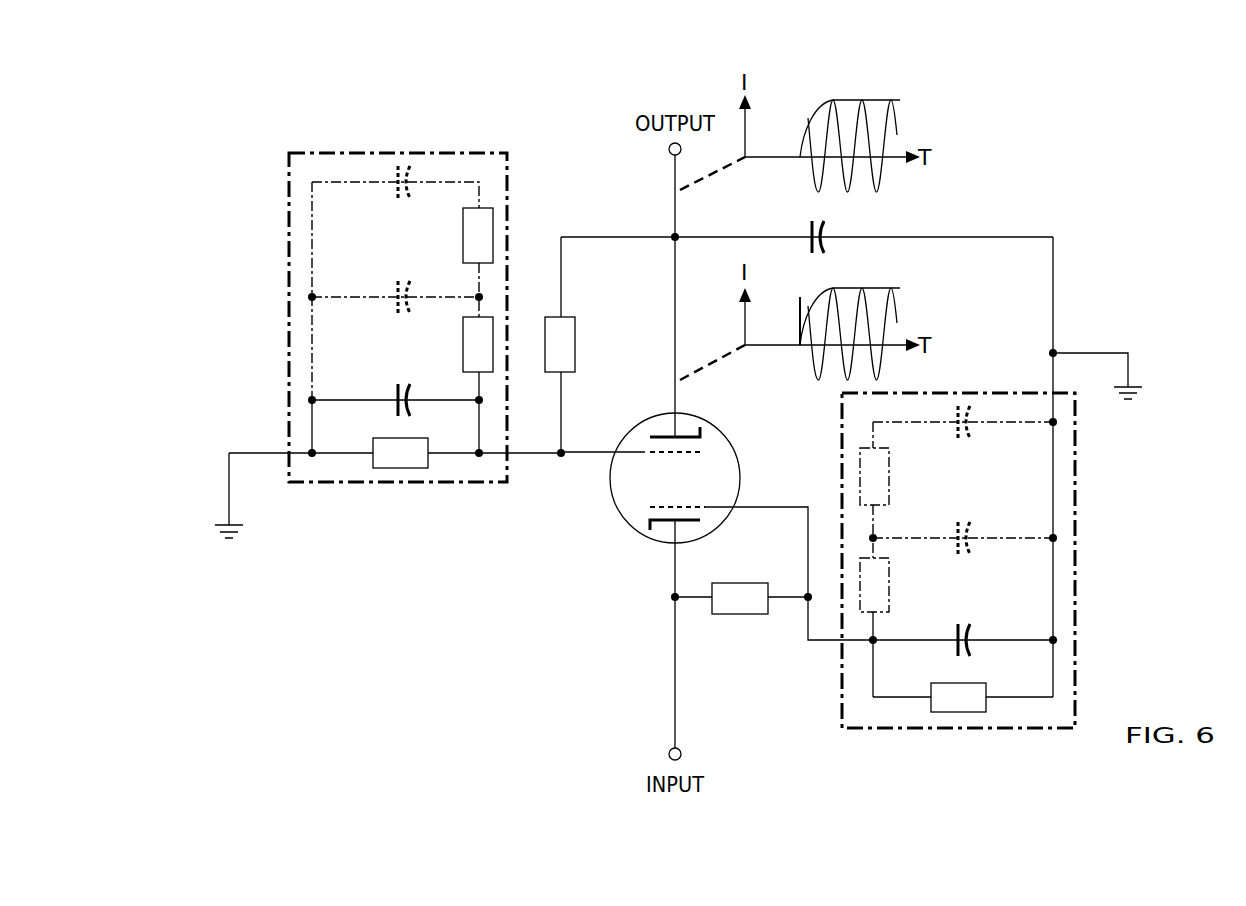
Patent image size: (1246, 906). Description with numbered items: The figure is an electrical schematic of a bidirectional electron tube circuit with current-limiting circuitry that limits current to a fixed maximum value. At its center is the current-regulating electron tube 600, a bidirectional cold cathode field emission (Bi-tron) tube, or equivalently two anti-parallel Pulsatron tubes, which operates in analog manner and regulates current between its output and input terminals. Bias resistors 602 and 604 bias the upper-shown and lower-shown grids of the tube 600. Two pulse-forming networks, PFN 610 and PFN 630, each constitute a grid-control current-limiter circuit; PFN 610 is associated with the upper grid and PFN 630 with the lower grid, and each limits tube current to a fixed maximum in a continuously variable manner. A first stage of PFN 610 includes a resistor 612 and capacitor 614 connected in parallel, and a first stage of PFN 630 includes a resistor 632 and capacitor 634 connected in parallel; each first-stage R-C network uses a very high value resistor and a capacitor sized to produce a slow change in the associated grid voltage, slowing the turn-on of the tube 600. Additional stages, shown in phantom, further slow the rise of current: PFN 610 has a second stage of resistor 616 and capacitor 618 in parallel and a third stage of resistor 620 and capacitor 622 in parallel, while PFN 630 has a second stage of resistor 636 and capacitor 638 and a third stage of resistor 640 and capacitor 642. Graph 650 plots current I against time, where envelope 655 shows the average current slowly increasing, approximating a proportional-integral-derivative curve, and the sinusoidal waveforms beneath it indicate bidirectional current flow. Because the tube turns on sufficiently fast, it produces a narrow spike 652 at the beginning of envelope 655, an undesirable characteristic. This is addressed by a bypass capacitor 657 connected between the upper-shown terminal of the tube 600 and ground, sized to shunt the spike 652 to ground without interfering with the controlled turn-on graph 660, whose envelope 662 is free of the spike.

The current-regulating electron tube 600 is at (620, 518).
The bias resistor 602 is at (577, 335).
The bias resistor 604 is at (745, 615).
The pulse-forming network 610 is at (288, 320).
The resistor 612 is at (373, 466).
The capacitor 614 is at (397, 390).
The resistor 616 is at (493, 318).
The capacitor 618 is at (393, 290).
The resistor 620 is at (490, 210).
The capacitor 622 is at (392, 170).
The pulse-forming network 630 is at (1078, 590).
The resistor 632 is at (928, 698).
The capacitor 634 is at (972, 628).
The resistor 636 is at (892, 595).
The capacitor 638 is at (972, 525).
The resistor 640 is at (858, 450).
The capacitor 642 is at (970, 410).
The graph 650 is at (934, 291).
The narrow spike 652 is at (800, 312).
The envelope 655 is at (852, 291).
The bypass capacitor 657 is at (830, 228).
The controlled turn-on graph 660 is at (930, 102).
The envelope 662 is at (845, 100).